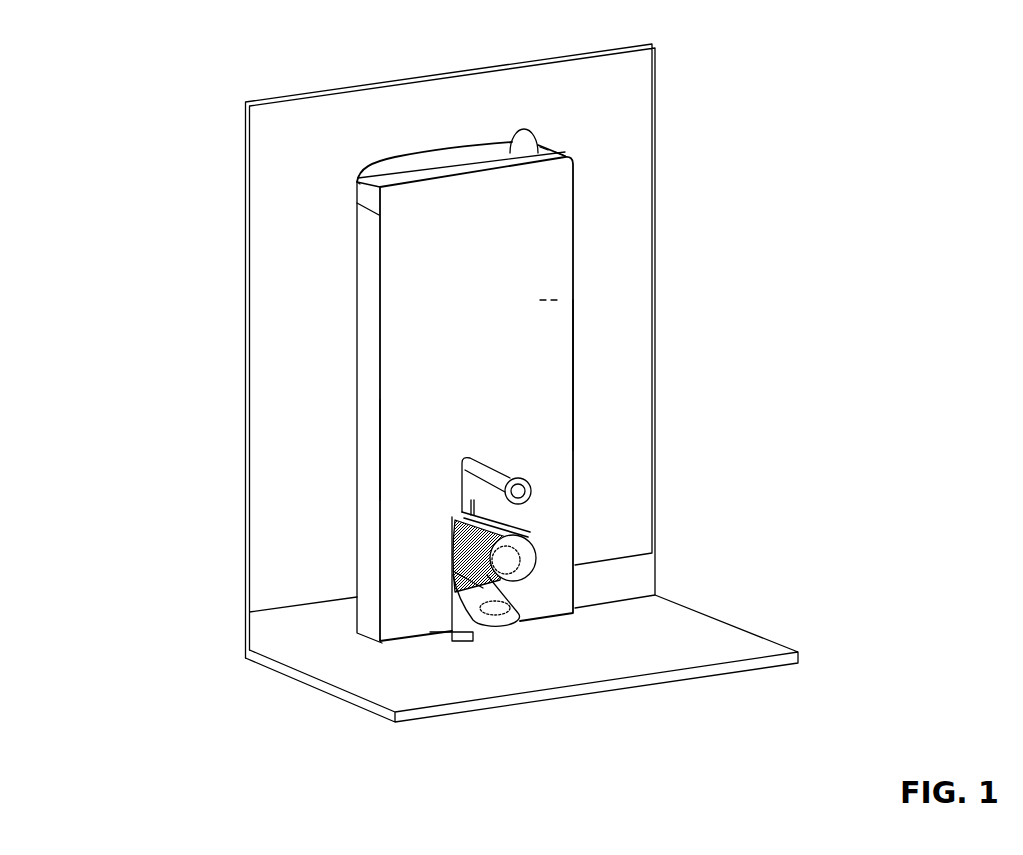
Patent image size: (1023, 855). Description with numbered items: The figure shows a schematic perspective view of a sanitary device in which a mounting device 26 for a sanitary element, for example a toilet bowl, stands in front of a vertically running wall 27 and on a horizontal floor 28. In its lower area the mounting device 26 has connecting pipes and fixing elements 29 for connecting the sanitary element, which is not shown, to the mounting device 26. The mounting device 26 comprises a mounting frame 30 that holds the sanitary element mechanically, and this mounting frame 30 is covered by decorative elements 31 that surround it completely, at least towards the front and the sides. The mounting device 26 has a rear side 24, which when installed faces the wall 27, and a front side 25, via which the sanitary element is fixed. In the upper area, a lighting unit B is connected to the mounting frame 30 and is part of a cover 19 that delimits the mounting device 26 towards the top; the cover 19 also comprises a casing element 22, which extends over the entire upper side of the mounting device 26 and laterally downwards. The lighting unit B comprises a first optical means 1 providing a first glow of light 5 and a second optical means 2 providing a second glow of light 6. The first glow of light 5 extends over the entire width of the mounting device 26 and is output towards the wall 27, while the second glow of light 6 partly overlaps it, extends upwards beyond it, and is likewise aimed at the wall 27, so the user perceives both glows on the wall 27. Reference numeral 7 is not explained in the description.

The first optical means 1 is at (515, 327).
The second optical means 2 is at (542, 143).
The first glow of light 5 is at (527, 97).
The second glow of light 6 is at (523, 131).
The housing wall 7 is at (515, 327).
The cover 19 is at (555, 152).
The casing element 22 is at (370, 196).
The rear side 24 is at (357, 418).
The front side 25 is at (422, 468).
The mounting device 26 is at (585, 395).
The wall 27 is at (633, 167).
The floor 28 is at (700, 640).
The connecting pipes and fixing elements 29 is at (542, 548).
The mounting frame 30 is at (555, 330).
The decorative elements 31 is at (552, 268).
The lighting unit B is at (357, 184).